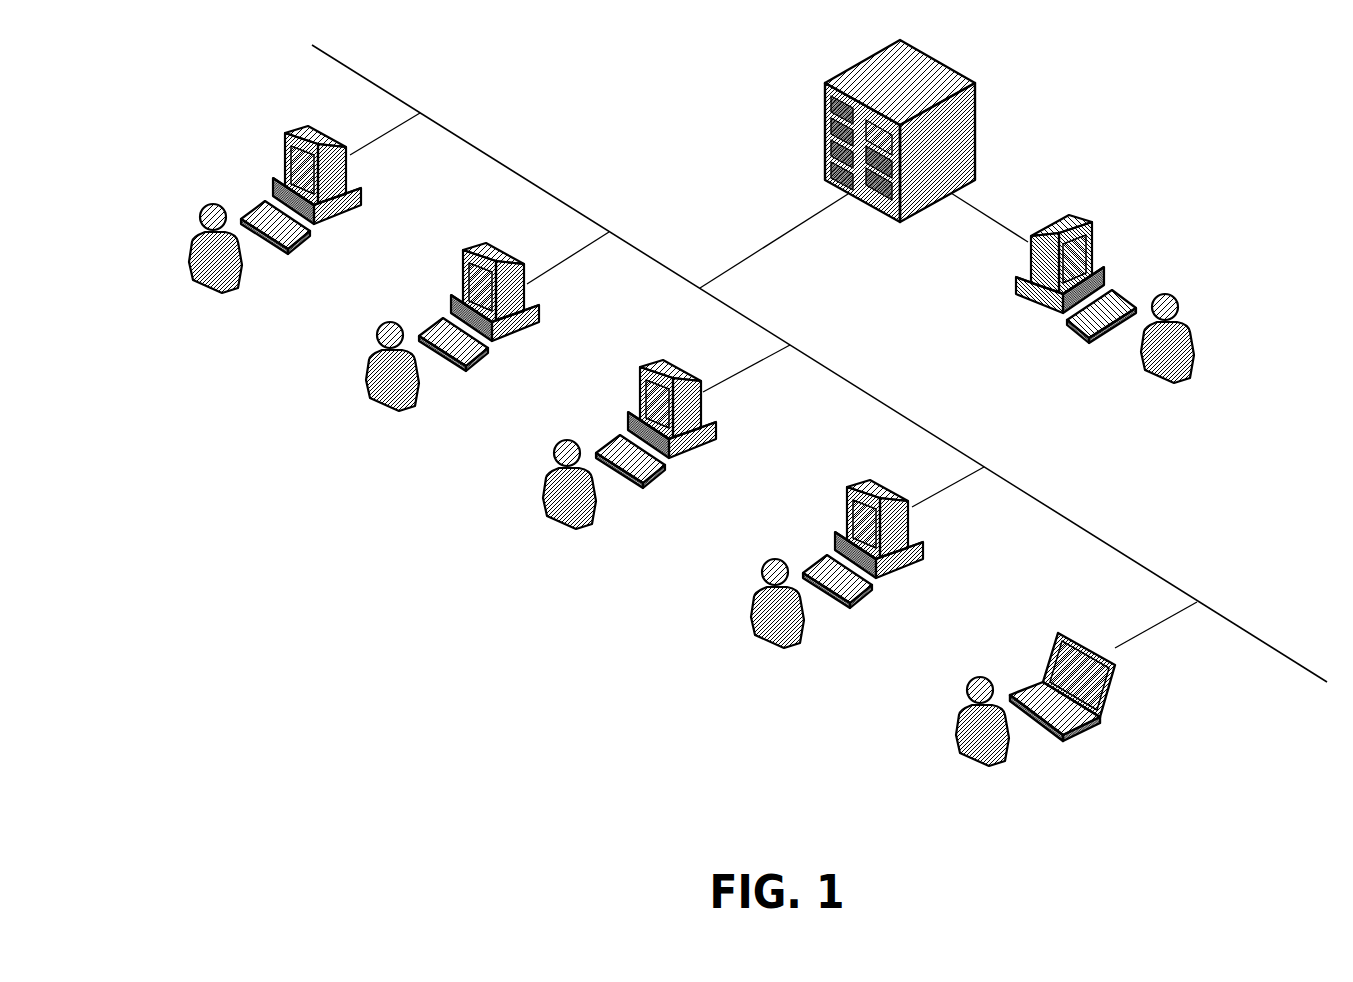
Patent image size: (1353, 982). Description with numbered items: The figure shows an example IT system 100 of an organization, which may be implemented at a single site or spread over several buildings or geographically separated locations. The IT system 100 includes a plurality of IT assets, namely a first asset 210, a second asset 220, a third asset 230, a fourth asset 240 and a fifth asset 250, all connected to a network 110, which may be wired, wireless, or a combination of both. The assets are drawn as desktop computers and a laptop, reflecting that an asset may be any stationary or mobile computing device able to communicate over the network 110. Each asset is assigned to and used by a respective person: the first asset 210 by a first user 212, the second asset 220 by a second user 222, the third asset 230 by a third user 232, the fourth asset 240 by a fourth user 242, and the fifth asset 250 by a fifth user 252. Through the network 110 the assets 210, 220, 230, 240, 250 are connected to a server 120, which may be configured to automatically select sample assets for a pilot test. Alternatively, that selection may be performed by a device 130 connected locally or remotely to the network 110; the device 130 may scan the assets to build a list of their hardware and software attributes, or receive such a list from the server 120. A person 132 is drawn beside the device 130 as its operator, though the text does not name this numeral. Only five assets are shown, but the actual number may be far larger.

The IT system 100 is at (629, 33).
The network 110 is at (517, 172).
The server 120 is at (940, 60).
The device 130 is at (1092, 220).
The administrator 132 is at (1180, 304).
The first asset 210 is at (282, 145).
The first user 212 is at (200, 217).
The second asset 220 is at (462, 270).
The second user 222 is at (377, 335).
The third asset 230 is at (640, 390).
The third user 232 is at (554, 452).
The fourth asset 240 is at (846, 507).
The fourth user 242 is at (762, 570).
The fifth asset 250 is at (1046, 652).
The fifth user 252 is at (967, 688).